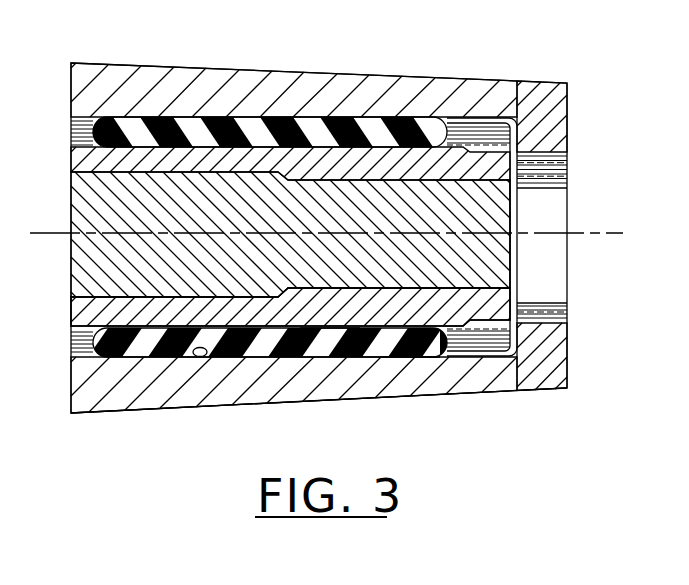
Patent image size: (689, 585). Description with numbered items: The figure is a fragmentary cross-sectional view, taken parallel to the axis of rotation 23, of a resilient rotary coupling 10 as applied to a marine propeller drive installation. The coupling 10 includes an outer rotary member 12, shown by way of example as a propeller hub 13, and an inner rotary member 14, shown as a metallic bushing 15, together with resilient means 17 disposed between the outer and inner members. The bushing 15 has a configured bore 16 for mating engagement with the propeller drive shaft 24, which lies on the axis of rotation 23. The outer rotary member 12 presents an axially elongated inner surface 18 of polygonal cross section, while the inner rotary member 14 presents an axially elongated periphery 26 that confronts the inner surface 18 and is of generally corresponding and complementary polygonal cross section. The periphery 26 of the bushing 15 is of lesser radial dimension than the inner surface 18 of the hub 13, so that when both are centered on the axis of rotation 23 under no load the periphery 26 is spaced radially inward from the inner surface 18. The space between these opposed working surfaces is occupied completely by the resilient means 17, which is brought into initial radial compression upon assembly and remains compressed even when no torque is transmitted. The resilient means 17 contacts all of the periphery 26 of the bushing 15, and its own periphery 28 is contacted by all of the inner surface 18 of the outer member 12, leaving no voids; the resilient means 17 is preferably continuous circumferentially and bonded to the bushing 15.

The resilient rotary coupling 10 is at (527, 72).
The outer rotary member 12 is at (547, 375).
The propeller hub 13 is at (503, 388).
The inner rotary member 14 is at (472, 323).
The bushing 15 is at (372, 320).
The configured bore 16 is at (500, 278).
The resilient means 17 is at (377, 130).
The inner surface 18 is at (200, 357).
The axis of rotation 23 is at (616, 233).
The propeller drive shaft 24 is at (498, 208).
The periphery 26 is at (327, 328).
The periphery of the resilient means 28 is at (407, 357).